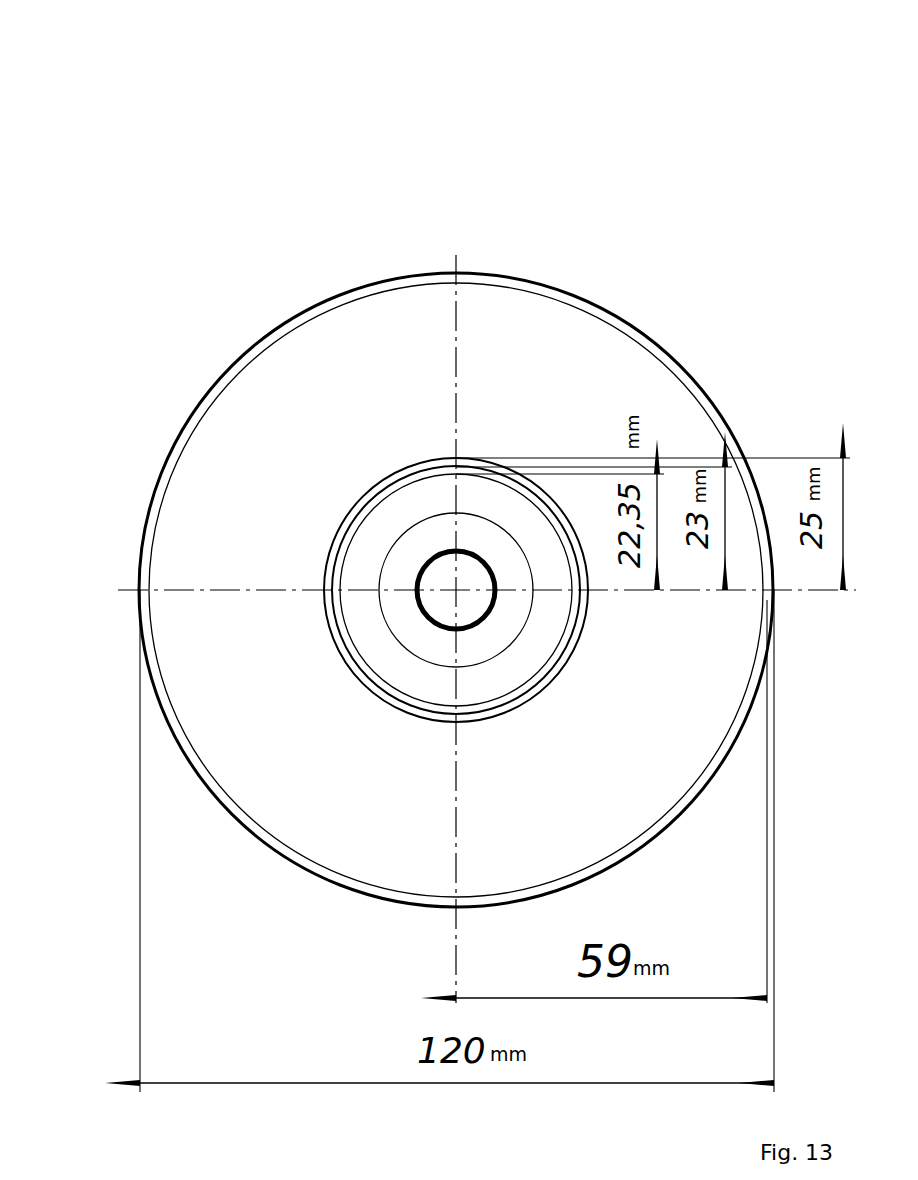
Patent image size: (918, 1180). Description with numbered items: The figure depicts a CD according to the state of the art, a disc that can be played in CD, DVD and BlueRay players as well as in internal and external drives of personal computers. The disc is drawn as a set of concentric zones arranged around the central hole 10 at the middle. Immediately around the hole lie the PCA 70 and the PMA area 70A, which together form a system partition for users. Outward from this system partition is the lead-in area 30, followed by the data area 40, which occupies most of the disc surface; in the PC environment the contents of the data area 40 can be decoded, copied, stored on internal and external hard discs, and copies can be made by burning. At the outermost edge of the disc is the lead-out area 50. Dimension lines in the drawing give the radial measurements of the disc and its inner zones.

The central hole 10 is at (435, 575).
The PCA 70 is at (370, 538).
The PMA area 70A is at (333, 535).
The lead-in area 30 is at (327, 580).
The data area 40 is at (213, 525).
The lead-out area 50 is at (152, 490).